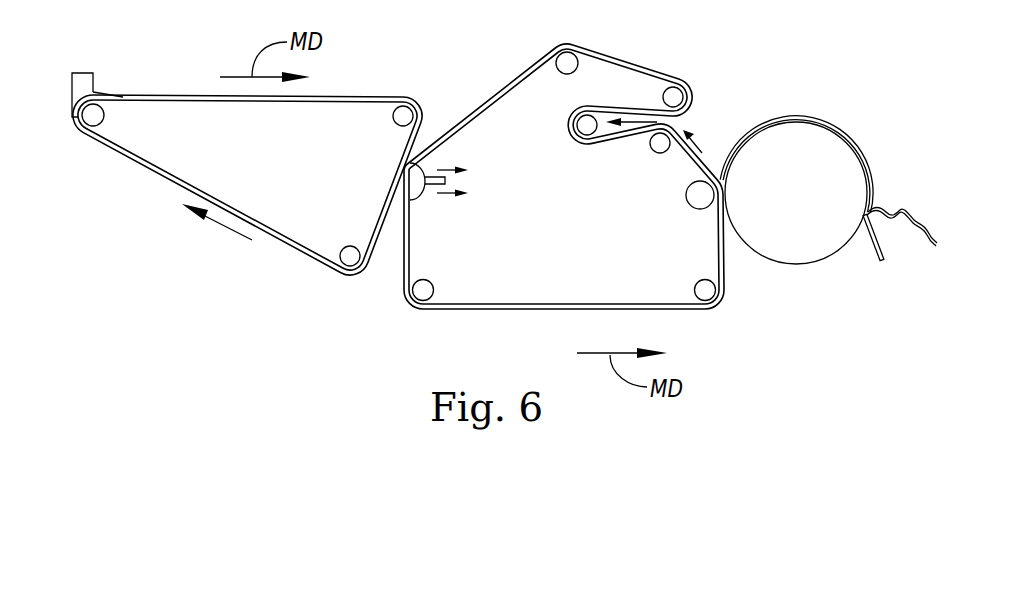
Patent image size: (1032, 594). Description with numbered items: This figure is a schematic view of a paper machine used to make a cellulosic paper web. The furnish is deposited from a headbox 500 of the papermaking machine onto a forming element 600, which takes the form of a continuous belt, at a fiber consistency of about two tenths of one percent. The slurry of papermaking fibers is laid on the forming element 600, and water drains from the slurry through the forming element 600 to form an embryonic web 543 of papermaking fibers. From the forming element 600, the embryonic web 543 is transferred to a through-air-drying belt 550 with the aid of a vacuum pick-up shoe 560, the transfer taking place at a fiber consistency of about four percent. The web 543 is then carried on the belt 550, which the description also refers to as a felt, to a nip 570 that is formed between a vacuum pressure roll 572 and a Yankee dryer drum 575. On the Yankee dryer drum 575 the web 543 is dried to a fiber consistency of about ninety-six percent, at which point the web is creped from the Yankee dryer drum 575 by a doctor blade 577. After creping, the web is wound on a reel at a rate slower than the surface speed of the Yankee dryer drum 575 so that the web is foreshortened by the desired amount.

The headbox 500 is at (92, 80).
The embryonic web 543 is at (343, 92).
The through-air-drying belt 550 is at (458, 128).
The vacuum pick-up shoe 560 is at (423, 198).
The nip 570 is at (715, 170).
The vacuum pressure roll 572 is at (688, 201).
The Yankee dryer drum 575 is at (815, 250).
The doctor blade 577 is at (882, 262).
The forming element 600 is at (283, 106).